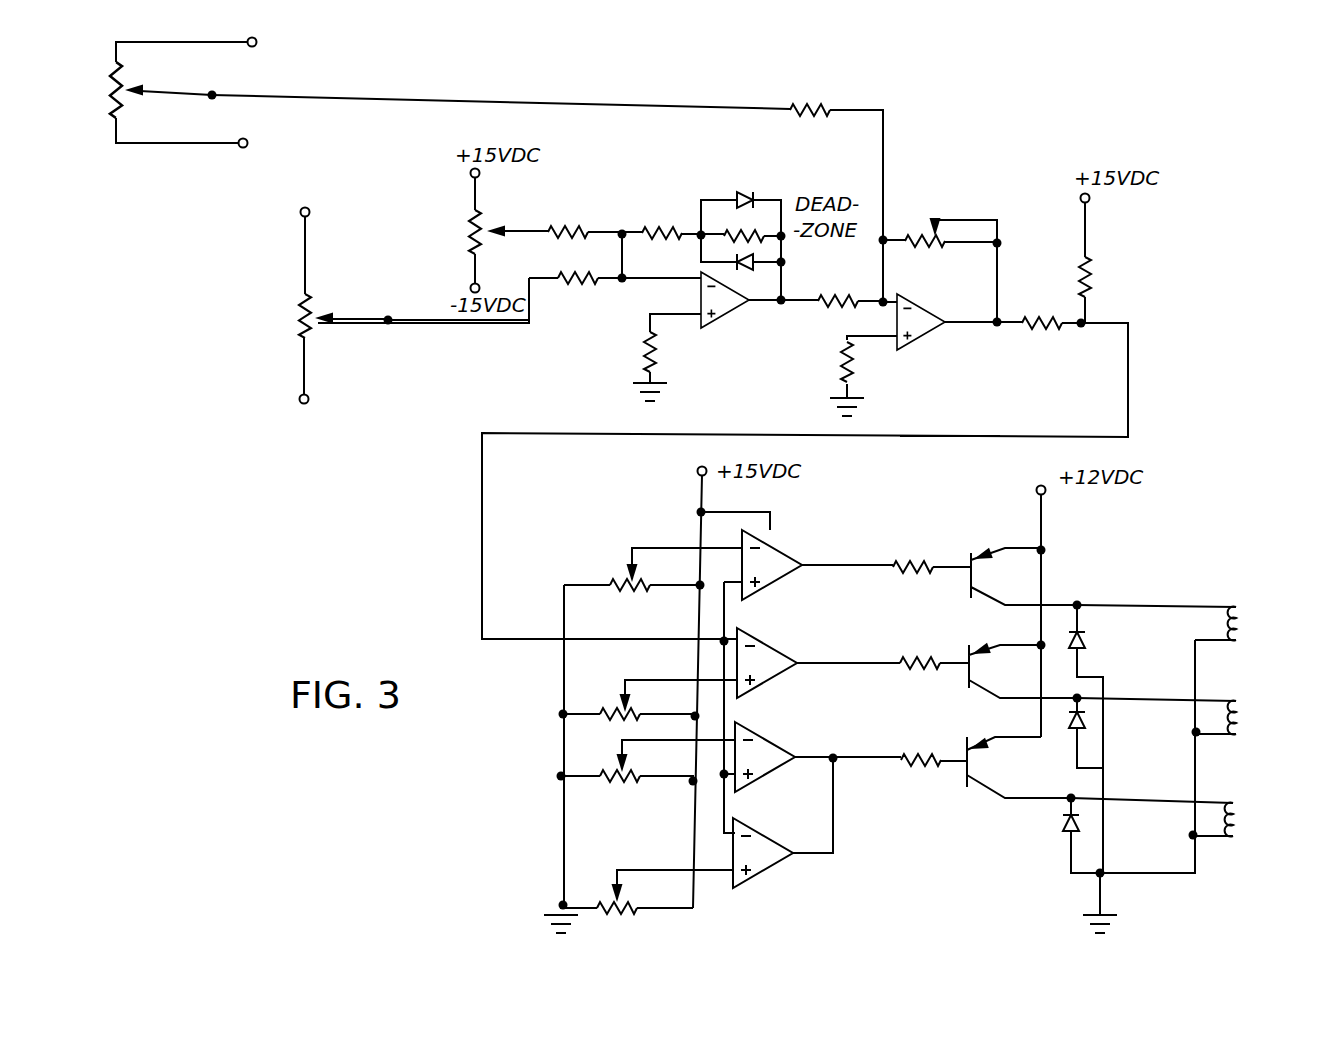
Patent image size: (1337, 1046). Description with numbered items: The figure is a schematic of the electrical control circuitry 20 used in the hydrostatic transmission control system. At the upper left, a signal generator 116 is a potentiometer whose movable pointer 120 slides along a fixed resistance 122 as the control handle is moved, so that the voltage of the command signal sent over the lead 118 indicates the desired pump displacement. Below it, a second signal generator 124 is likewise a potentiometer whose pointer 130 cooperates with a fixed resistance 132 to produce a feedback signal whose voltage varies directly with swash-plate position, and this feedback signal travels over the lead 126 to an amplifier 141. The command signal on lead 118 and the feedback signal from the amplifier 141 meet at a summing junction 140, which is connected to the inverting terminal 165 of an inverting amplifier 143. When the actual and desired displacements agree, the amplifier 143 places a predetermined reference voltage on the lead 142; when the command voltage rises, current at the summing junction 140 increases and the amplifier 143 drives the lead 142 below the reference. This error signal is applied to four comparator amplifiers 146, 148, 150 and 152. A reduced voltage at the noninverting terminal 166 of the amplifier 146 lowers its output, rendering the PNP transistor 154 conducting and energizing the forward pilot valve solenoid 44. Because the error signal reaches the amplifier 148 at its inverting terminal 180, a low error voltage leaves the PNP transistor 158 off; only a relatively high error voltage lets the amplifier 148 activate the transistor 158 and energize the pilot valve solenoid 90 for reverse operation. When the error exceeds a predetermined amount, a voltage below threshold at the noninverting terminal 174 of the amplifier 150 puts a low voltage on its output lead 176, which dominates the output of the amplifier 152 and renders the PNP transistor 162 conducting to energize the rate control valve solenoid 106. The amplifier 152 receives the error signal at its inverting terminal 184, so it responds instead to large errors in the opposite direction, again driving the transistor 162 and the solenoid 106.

The electrical control circuitry 20 is at (1262, 146).
The signal generator 116 is at (97, 122).
The lead 118 is at (642, 104).
The movable pointer 120 is at (170, 92).
The fixed resistance 122 is at (104, 90).
The second signal generator 124 is at (258, 372).
The lead 126 is at (420, 328).
The pointer 130 is at (374, 319).
The fixed resistance 132 is at (316, 298).
The summing junction 140 is at (880, 298).
The amplifier 141 is at (720, 318).
The lead 142 is at (936, 438).
The inverting amplifier 143 is at (918, 330).
The inverting terminal 165 is at (915, 306).
The amplifier 146 is at (788, 560).
The noninverting terminal 166 is at (762, 584).
The inverting terminal 180 is at (760, 648).
The amplifier 148 is at (770, 682).
The amplifier 150 is at (778, 745).
The noninverting terminal 174 is at (750, 776).
The output lead 176 is at (840, 748).
The inverting terminal 184 is at (754, 835).
The amplifier 152 is at (763, 872).
The PNP transistor 154 is at (975, 559).
The PNP transistor 158 is at (960, 659).
The PNP transistor 162 is at (992, 726).
The forward pilot valve solenoid 44 is at (1244, 626).
The pilot valve solenoid 90 is at (1242, 720).
The rate control valve solenoid 106 is at (1238, 822).